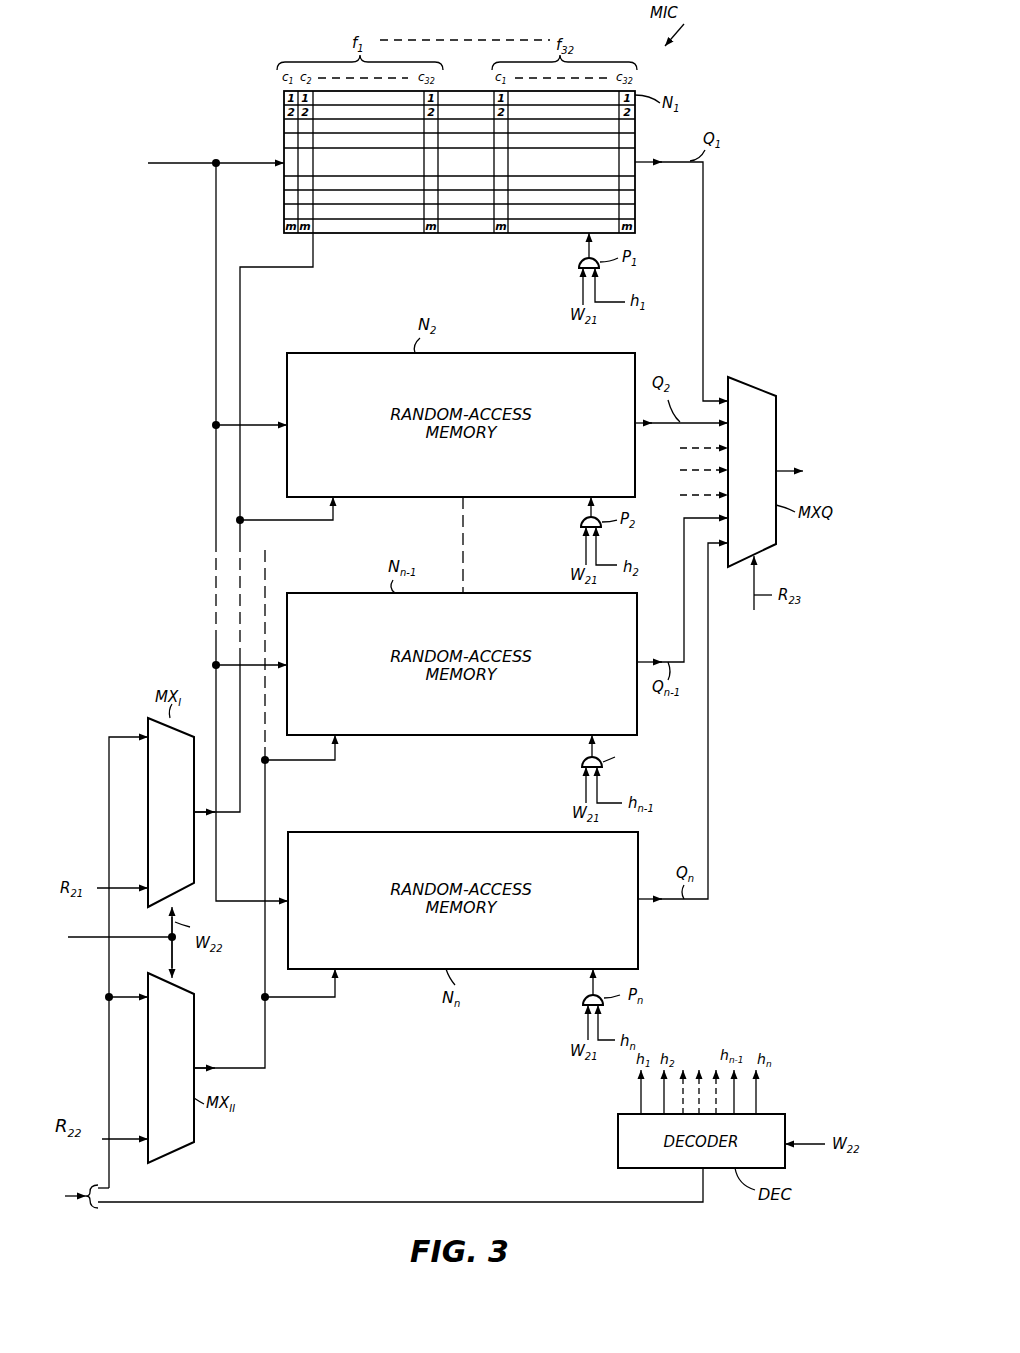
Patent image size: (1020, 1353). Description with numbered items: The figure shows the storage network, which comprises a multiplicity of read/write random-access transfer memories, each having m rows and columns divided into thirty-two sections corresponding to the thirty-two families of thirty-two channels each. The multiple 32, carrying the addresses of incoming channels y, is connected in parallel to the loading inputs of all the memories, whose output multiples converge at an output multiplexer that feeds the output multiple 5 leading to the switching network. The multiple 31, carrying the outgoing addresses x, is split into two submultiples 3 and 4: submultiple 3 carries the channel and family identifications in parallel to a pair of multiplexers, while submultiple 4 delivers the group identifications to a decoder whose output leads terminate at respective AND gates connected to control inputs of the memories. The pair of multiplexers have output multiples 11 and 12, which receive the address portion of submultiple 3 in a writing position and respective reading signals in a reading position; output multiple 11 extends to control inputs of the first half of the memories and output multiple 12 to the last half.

The multiple 32 is at (190, 162).
The multiple 31 is at (83, 1212).
The submultiple 3 is at (109, 1048).
The submultiple 4 is at (350, 1202).
The output multiple 5 is at (792, 468).
The output multiple 11 is at (240, 814).
The output multiple 12 is at (262, 1068).